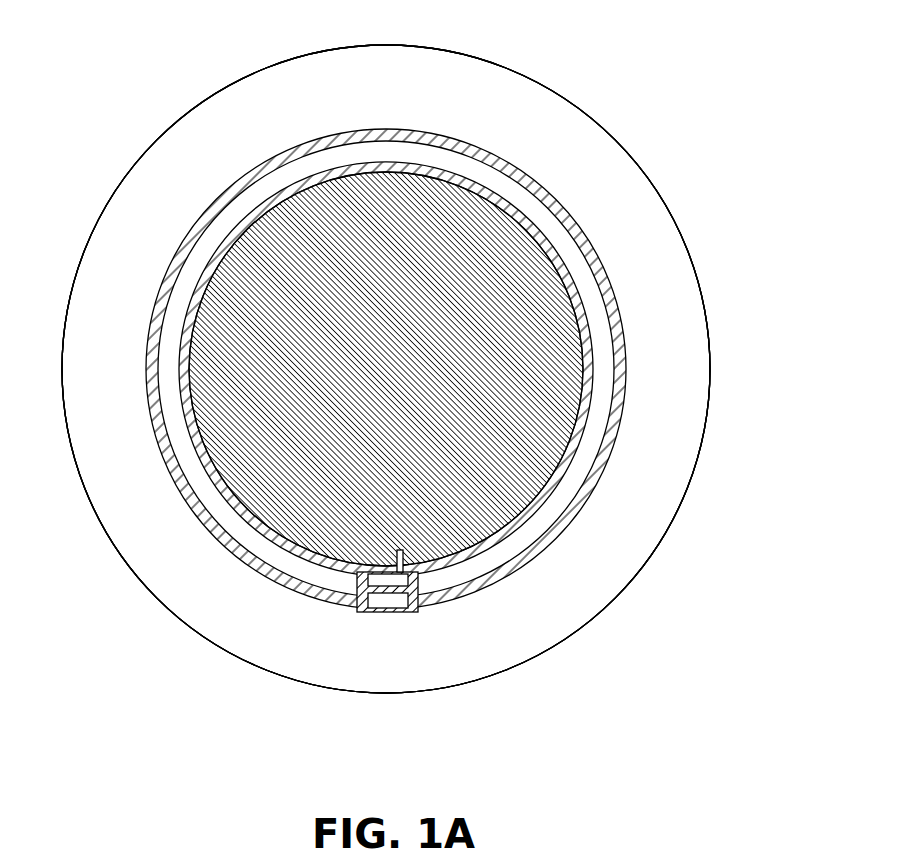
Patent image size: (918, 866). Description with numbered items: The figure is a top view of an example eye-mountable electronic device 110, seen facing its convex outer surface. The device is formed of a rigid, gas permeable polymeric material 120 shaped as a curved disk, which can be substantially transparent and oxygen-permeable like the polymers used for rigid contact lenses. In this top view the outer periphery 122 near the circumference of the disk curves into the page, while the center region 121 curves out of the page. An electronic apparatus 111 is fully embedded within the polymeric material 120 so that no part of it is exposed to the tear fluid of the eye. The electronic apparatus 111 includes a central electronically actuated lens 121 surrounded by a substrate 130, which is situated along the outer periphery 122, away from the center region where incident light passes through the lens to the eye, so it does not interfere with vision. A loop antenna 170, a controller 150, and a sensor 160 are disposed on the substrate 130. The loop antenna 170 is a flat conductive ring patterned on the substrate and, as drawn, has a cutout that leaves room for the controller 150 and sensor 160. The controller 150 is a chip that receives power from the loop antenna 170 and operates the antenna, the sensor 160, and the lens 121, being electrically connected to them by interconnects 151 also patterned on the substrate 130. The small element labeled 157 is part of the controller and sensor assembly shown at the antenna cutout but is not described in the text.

The eye-mountable electronic device 110 is at (146, 70).
The electronic apparatus 111 is at (190, 200).
The rigid, gas permeable polymeric material 120 is at (106, 541).
The electronically actuated lens 121 is at (353, 173).
The outer periphery 122 is at (323, 83).
The substrate 130 is at (577, 522).
The controller 150 is at (382, 572).
The interconnects 151 is at (406, 566).
The connector housing 157 is at (424, 613).
The sensor 160 is at (380, 613).
The loop antenna 170 is at (513, 557).